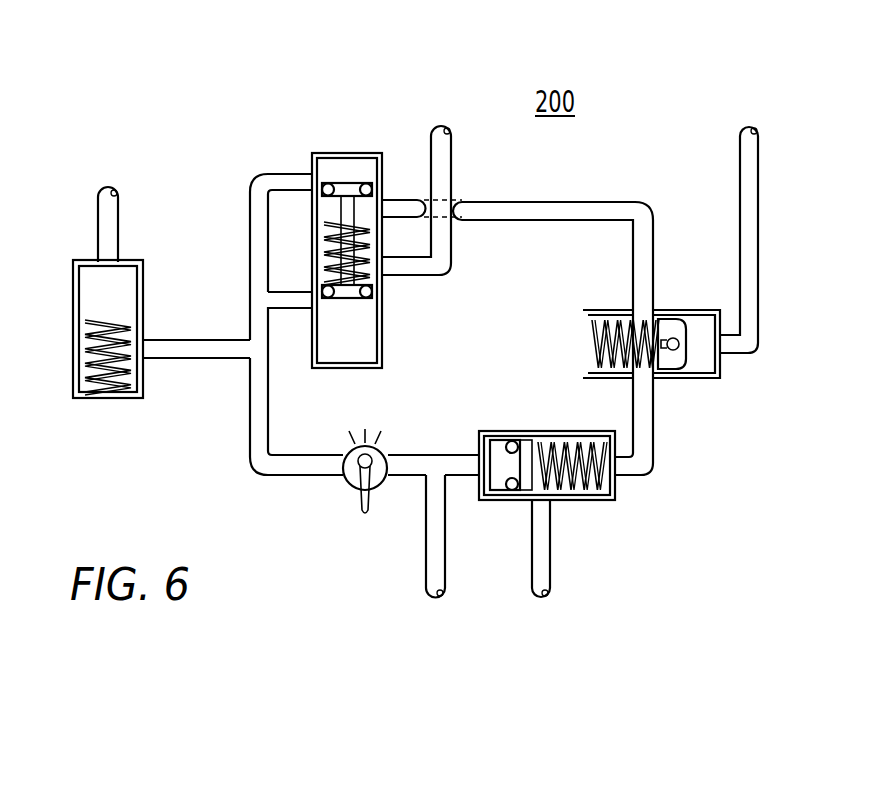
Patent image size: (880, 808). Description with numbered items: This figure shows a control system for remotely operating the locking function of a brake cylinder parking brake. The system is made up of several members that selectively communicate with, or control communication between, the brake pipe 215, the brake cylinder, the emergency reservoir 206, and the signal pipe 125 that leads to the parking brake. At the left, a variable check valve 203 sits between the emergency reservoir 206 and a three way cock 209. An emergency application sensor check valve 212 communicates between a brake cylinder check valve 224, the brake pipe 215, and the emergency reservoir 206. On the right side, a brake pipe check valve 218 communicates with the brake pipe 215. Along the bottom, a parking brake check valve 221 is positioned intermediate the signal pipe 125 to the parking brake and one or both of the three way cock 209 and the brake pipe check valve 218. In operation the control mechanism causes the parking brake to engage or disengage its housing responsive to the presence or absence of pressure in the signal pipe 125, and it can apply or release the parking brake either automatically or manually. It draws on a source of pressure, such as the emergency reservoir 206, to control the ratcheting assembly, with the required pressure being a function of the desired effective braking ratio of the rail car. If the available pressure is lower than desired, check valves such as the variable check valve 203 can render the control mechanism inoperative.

The variable check valve 203 is at (110, 400).
The emergency reservoir 206 is at (107, 180).
The three way cock 209 is at (352, 493).
The emergency application sensor check valve 212 is at (382, 330).
The brake pipe 215 is at (441, 120).
The brake pipe check valve 218 is at (672, 378).
The parking brake check valve 221 is at (500, 500).
The brake cylinder check valve 224 is at (436, 605).
The signal pipe 125 is at (550, 556).